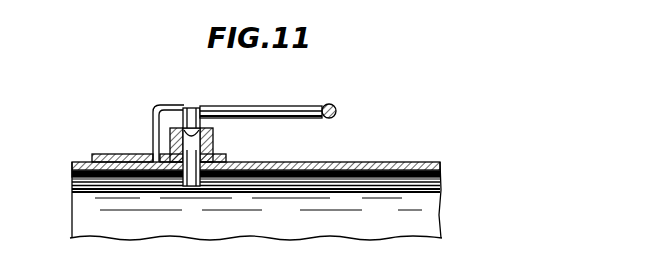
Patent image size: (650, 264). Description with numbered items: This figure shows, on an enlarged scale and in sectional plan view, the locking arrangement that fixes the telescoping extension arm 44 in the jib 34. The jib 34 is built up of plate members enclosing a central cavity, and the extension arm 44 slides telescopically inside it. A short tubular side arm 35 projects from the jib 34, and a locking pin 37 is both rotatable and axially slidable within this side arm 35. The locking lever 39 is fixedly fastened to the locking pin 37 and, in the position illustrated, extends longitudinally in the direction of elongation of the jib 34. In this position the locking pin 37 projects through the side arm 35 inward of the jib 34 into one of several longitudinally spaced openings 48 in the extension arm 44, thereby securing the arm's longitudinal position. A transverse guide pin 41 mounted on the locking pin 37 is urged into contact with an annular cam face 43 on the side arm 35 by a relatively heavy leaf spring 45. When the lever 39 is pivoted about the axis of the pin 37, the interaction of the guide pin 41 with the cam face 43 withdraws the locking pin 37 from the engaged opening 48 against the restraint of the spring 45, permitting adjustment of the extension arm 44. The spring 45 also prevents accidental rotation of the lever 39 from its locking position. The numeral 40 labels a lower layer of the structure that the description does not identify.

The jib 34 is at (420, 162).
The tubular side arm 35 is at (213, 148).
The locking pin 37 is at (188, 134).
The locking lever 39 is at (311, 104).
The inner panel layer 40 is at (205, 187).
The transverse guide pin 41 is at (178, 123).
The annular cam face 43 is at (205, 137).
The extension arm 44 is at (72, 180).
The leaf spring 45 is at (153, 138).
The longitudinally spaced openings 48 is at (300, 161).